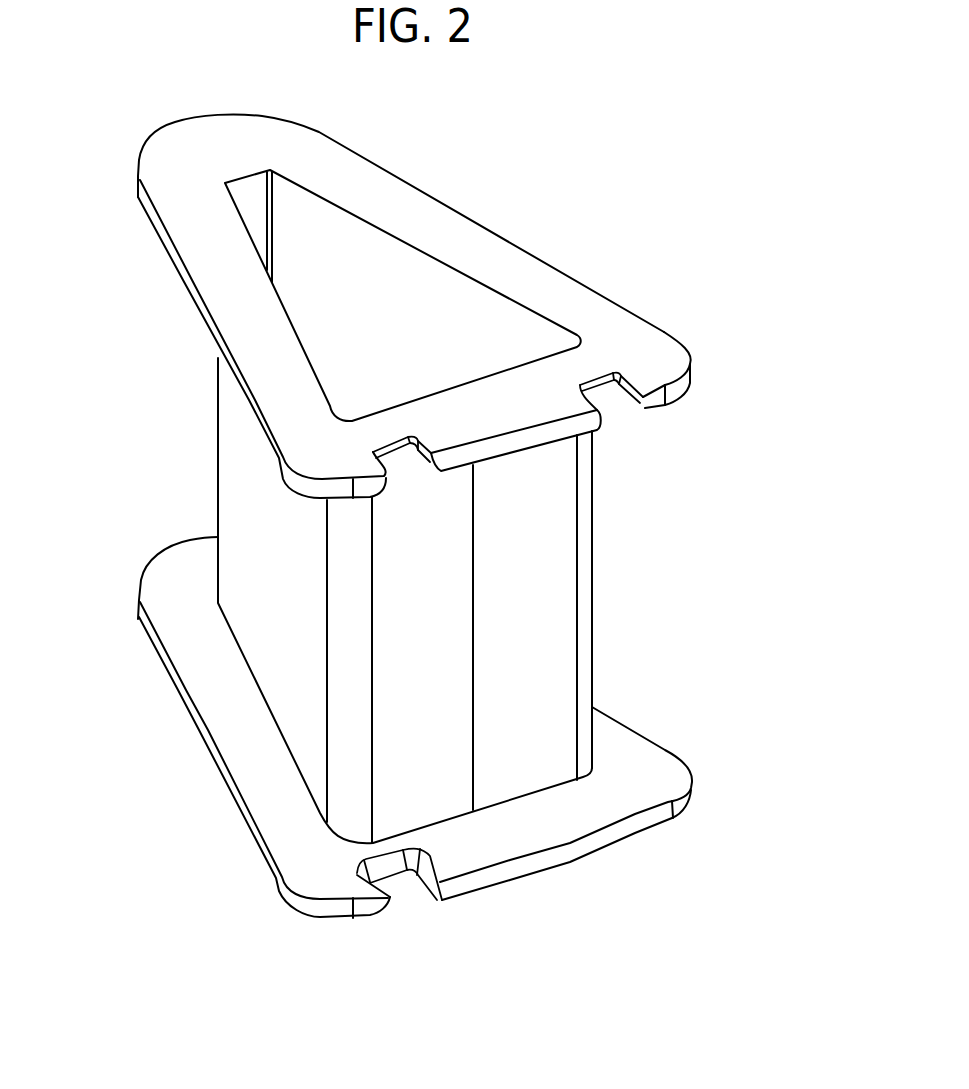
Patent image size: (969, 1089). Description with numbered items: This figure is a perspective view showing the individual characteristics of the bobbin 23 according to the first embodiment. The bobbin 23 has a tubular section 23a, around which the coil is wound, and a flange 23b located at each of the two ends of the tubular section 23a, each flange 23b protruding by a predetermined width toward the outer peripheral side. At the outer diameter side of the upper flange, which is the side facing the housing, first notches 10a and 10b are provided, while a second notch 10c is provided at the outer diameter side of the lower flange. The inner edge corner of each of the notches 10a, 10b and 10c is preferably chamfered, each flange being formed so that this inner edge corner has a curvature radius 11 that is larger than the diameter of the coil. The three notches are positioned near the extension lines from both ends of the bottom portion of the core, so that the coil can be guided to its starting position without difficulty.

The bobbin 23 is at (585, 223).
The tubular section 23a is at (230, 473).
The flange 23b is at (610, 307).
The first notch 10a is at (620, 403).
The first notch 10b is at (423, 472).
The second notch 10c is at (425, 900).
The curvature radius R 11 is at (437, 870).